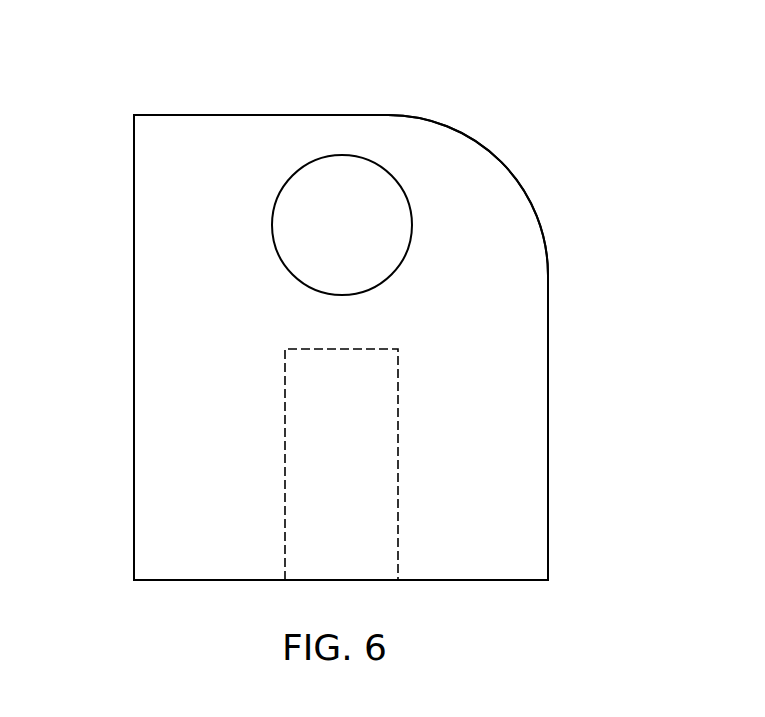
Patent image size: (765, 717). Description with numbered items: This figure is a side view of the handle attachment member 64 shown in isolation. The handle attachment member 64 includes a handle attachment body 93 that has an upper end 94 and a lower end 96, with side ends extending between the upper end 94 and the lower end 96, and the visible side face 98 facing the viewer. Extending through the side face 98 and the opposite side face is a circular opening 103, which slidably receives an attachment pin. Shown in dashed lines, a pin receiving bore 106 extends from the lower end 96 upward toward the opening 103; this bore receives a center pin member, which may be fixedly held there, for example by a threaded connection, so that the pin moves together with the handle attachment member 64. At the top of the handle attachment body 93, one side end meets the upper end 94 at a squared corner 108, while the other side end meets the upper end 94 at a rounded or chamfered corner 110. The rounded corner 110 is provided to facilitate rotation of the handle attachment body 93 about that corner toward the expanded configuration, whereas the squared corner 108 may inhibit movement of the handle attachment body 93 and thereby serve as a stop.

The upper end 94 is at (230, 96).
The squared corner 108 is at (134, 115).
The rounded corner 110 is at (511, 172).
The handle attachment member 64 is at (608, 203).
The opening 103 is at (352, 222).
The pin receiving bore 106 is at (398, 400).
The side face 98 is at (185, 450).
The handle attachment body 93 is at (142, 499).
The lower end 96 is at (175, 580).